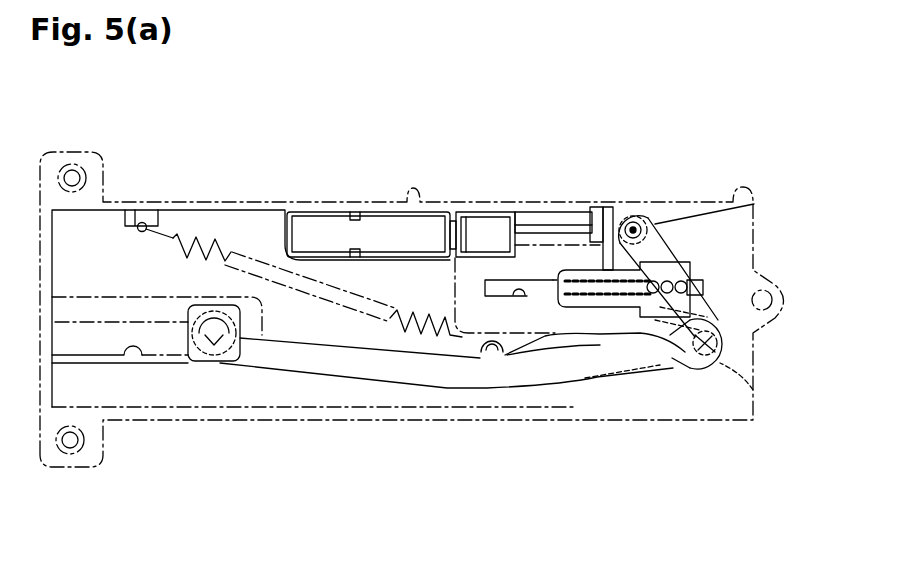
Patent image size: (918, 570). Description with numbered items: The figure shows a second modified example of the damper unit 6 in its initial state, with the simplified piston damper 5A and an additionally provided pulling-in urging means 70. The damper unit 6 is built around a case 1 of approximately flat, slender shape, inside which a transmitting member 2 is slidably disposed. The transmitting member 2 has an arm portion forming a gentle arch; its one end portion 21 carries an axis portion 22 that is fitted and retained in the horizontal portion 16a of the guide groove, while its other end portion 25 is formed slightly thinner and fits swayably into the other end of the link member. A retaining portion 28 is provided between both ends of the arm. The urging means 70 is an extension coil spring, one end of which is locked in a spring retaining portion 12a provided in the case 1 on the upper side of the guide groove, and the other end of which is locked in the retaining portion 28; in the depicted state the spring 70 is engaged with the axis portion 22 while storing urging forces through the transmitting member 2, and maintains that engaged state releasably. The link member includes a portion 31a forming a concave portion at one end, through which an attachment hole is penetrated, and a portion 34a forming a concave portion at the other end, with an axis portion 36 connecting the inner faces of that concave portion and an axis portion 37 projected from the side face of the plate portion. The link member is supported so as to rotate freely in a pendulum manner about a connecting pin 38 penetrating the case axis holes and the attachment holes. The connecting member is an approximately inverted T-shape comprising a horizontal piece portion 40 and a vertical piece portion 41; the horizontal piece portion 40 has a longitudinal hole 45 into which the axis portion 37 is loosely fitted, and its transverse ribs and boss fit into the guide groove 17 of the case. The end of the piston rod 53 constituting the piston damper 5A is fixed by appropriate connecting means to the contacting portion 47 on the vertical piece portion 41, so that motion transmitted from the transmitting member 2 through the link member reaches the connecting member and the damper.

The damper unit 6 is at (224, 164).
The case 1 is at (251, 196).
The horizontal portion 16a is at (143, 357).
The spring retaining portion 12a is at (153, 225).
The urging means 70 is at (227, 256).
The piston damper 5A is at (334, 230).
The piston rod 53 is at (542, 217).
The contacting portion 47 is at (598, 225).
The vertical piece portion 41 is at (607, 240).
The connecting pin 38 is at (637, 228).
The portion 31a is at (680, 240).
The longitudinal hole 45 is at (754, 206).
The horizontal piece portion 40 is at (603, 303).
The axis portion 37 is at (672, 283).
The guide groove 17 is at (520, 292).
The retaining portion 28 is at (523, 350).
The transmitting member 2 is at (426, 392).
The one end portion 21 is at (214, 370).
The axis portion 22 is at (220, 368).
The portion 34a is at (712, 368).
The other end portion 25 is at (686, 358).
The axis portion 36 is at (754, 392).